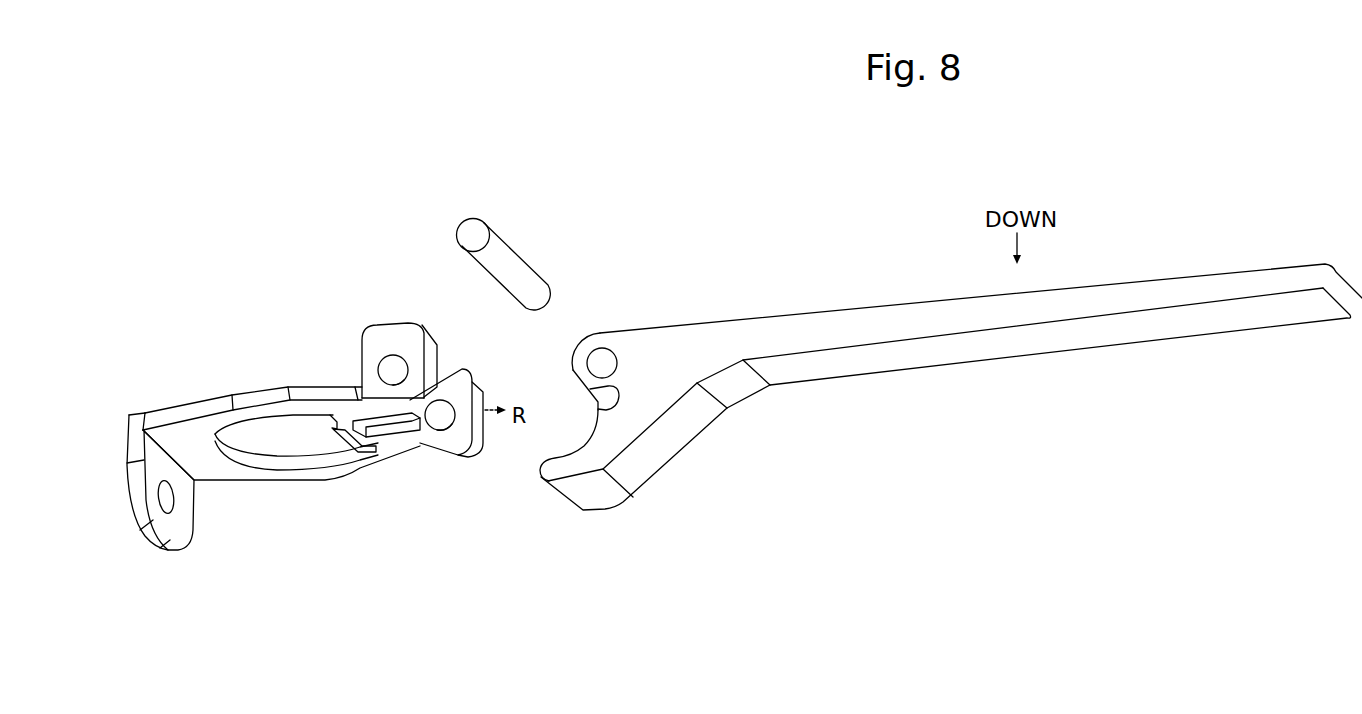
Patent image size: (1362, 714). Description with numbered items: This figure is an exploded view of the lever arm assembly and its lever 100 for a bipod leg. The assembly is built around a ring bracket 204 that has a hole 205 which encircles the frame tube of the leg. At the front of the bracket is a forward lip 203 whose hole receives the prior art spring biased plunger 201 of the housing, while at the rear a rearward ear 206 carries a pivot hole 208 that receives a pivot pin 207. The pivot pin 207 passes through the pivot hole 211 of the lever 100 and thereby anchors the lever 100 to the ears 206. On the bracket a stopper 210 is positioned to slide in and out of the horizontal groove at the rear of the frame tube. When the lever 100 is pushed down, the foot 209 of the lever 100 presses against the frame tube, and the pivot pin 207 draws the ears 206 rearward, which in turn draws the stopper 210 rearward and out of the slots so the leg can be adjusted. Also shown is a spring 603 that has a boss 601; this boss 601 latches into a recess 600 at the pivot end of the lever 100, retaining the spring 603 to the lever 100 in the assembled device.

The lever 100 is at (1018, 342).
The spring biased plunger 201 is at (170, 502).
The forward lip 203 is at (148, 457).
The ring bracket 204 is at (243, 398).
The hole 205 is at (292, 442).
The rearward ear 206 is at (403, 337).
The pivot pin 207 is at (512, 262).
The pivot hole 208 is at (388, 370).
The foot 209 is at (553, 470).
The stopper 210 is at (352, 442).
The pivot hole 211 is at (628, 341).
The recess 600 is at (567, 365).
The boss 601 is at (420, 412).
The spring 603 is at (405, 437).